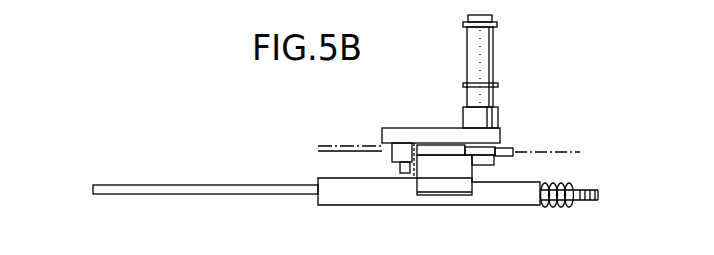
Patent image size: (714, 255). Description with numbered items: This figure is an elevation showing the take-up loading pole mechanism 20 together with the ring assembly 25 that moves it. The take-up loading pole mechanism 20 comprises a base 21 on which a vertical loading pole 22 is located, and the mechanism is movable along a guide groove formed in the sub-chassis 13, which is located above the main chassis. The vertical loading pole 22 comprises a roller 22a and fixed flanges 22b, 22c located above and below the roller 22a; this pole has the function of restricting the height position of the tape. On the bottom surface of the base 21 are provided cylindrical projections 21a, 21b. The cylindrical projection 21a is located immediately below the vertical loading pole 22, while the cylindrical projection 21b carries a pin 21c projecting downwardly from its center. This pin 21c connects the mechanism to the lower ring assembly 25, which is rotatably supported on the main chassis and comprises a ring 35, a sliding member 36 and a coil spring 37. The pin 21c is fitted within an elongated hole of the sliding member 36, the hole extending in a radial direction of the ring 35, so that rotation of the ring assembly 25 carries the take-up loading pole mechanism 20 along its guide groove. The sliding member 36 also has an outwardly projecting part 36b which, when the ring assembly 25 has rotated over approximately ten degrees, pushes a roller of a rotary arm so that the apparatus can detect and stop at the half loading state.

The sub-chassis 13 is at (559, 131).
The take-up loading pole mechanism 20 is at (427, 86).
The base 21 is at (417, 128).
The cylindrical projection 21a is at (485, 145).
The cylindrical projection 21b is at (402, 150).
The pin 21c is at (400, 170).
The vertical loading pole 22 is at (504, 45).
The roller 22a is at (489, 65).
The fixed flange 22b is at (463, 25).
The fixed flange 22c is at (498, 88).
The ring assembly 25 is at (248, 205).
The ring 35 is at (187, 185).
The sliding member 36 is at (380, 203).
The outwardly projecting part 36b is at (452, 187).
The coil spring 37 is at (560, 207).